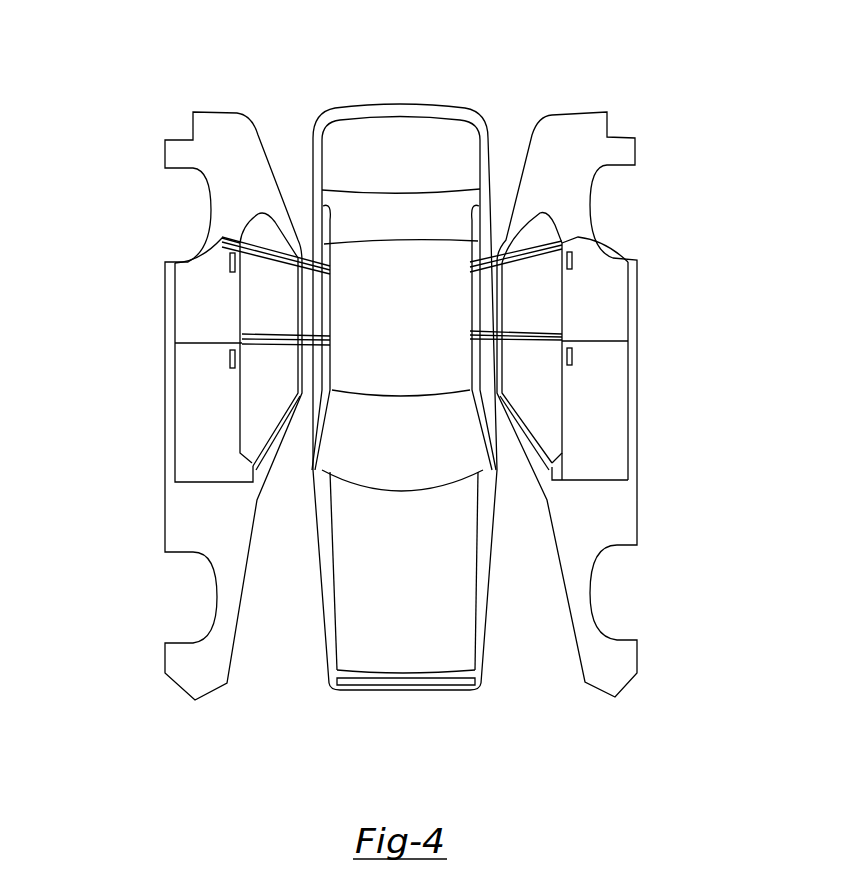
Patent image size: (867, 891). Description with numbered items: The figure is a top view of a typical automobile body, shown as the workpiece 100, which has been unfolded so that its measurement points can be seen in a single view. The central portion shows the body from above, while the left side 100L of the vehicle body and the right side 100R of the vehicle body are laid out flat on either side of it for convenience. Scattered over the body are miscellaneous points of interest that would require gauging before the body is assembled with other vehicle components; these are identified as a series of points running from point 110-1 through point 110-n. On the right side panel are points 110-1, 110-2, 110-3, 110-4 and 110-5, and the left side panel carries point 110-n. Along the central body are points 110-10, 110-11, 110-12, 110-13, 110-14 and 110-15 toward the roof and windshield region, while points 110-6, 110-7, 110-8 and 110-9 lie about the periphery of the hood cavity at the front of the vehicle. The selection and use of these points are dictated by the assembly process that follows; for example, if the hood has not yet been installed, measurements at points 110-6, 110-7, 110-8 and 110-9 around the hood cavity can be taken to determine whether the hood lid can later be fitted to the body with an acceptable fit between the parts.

The workpiece 100 is at (303, 697).
The right side of the vehicle body 100R is at (252, 705).
The left side of the vehicle body 100L is at (551, 698).
The point of interest 110-1 is at (600, 443).
The point of interest 110-2 is at (610, 480).
The point of interest 110-3 is at (630, 397).
The point of interest 110-4 is at (630, 298).
The point of interest 110-5 is at (630, 278).
The point of interest 110-6 is at (472, 595).
The point of interest 110-7 is at (406, 675).
The point of interest 110-8 is at (332, 572).
The point of interest 110-9 is at (400, 491).
The point of interest 110-10 is at (333, 362).
The point of interest 110-11 is at (470, 357).
The point of interest 110-12 is at (400, 190).
The point of interest 110-13 is at (489, 152).
The point of interest 110-14 is at (401, 105).
The point of interest 110-15 is at (315, 160).
The point of interest 110-n is at (175, 303).